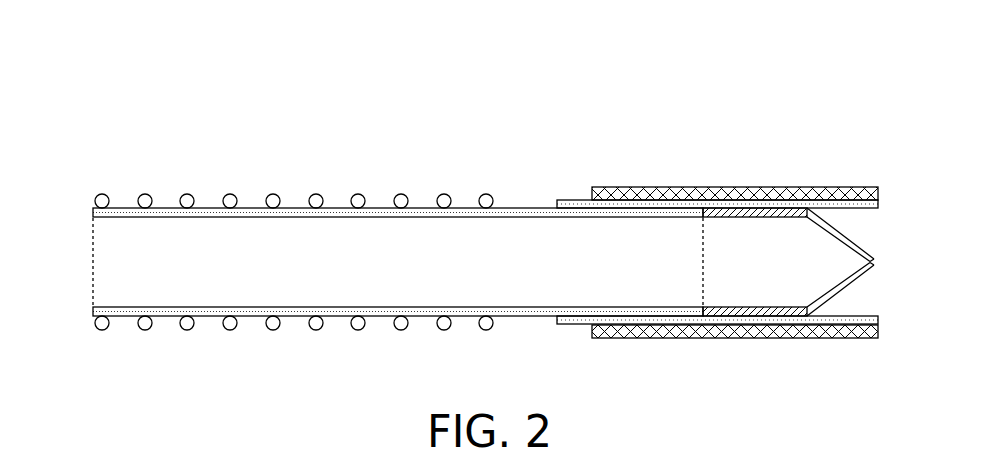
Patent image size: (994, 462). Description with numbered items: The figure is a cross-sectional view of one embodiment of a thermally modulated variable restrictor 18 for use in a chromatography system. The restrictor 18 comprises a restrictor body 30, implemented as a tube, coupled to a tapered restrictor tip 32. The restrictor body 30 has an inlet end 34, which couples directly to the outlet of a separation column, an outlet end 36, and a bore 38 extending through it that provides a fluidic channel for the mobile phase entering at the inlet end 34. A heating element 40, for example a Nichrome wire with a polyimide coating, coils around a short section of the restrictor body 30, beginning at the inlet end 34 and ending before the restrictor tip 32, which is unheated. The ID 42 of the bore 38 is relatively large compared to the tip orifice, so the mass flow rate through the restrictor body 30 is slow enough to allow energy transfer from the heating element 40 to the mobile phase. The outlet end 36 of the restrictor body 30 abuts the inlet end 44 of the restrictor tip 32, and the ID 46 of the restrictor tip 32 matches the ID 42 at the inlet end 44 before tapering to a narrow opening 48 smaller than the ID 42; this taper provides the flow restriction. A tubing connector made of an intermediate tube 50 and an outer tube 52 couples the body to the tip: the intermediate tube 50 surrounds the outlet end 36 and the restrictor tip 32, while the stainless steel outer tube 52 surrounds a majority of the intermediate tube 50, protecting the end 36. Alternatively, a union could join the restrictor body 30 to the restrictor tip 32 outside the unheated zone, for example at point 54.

The thermally modulated variable restrictor 18 is at (435, 58).
The restrictor body 30 is at (125, 315).
The restrictor tip 32 is at (855, 245).
The inlet end 34 is at (92, 271).
The outlet end 36 is at (703, 265).
The bore 38 is at (227, 292).
The heating element 40 is at (142, 197).
The ID of the bore 42 is at (375, 225).
The inlet end of the restrictor tip 44 is at (703, 285).
The ID of the restrictor tip 46 is at (790, 225).
The narrow opening 48 is at (880, 262).
The intermediate tube 50 is at (573, 201).
The outer tube 52 is at (855, 190).
The point 54 is at (520, 328).